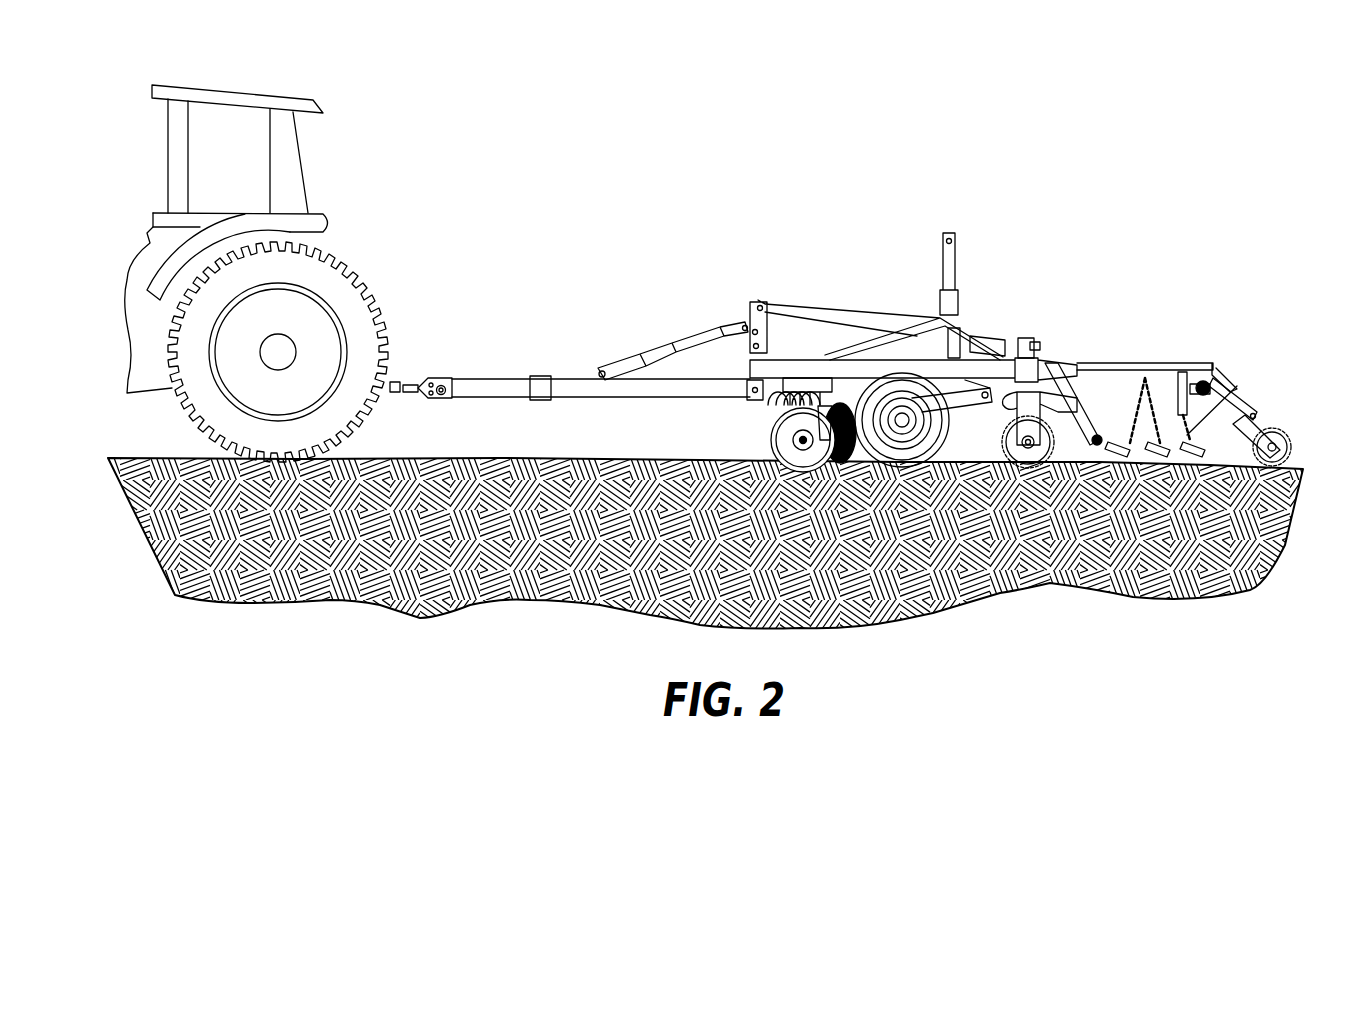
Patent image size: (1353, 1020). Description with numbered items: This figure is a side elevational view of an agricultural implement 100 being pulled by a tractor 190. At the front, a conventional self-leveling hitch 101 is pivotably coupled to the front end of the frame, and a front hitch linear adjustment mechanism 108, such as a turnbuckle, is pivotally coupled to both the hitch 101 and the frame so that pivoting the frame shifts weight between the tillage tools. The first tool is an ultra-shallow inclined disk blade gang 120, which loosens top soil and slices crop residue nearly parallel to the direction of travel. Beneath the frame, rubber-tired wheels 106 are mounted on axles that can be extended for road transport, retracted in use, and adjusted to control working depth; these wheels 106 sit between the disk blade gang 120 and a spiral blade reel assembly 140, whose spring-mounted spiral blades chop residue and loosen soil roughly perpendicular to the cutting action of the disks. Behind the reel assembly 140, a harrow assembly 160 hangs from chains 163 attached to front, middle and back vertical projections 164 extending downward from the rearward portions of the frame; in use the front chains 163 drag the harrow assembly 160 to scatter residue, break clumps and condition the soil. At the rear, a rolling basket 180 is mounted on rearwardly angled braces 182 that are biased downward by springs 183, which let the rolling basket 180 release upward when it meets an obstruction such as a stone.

The tractor 190 is at (376, 134).
The implement 100 is at (760, 194).
The hitch 101 is at (401, 390).
The wheels 106 is at (853, 378).
The front hitch linear adjustment mechanism 108 is at (598, 372).
The ultra-shallow inclined disk blade gang 120 is at (754, 440).
The spiral blade reel assembly 140 is at (1050, 420).
The harrow assembly 160 is at (1137, 393).
The chains 163 is at (1200, 424).
The vertical projections 164 is at (1087, 413).
The rolling basket 180 is at (1279, 430).
The rearwardly angled braces 182 is at (1213, 393).
The springs 183 is at (1200, 383).